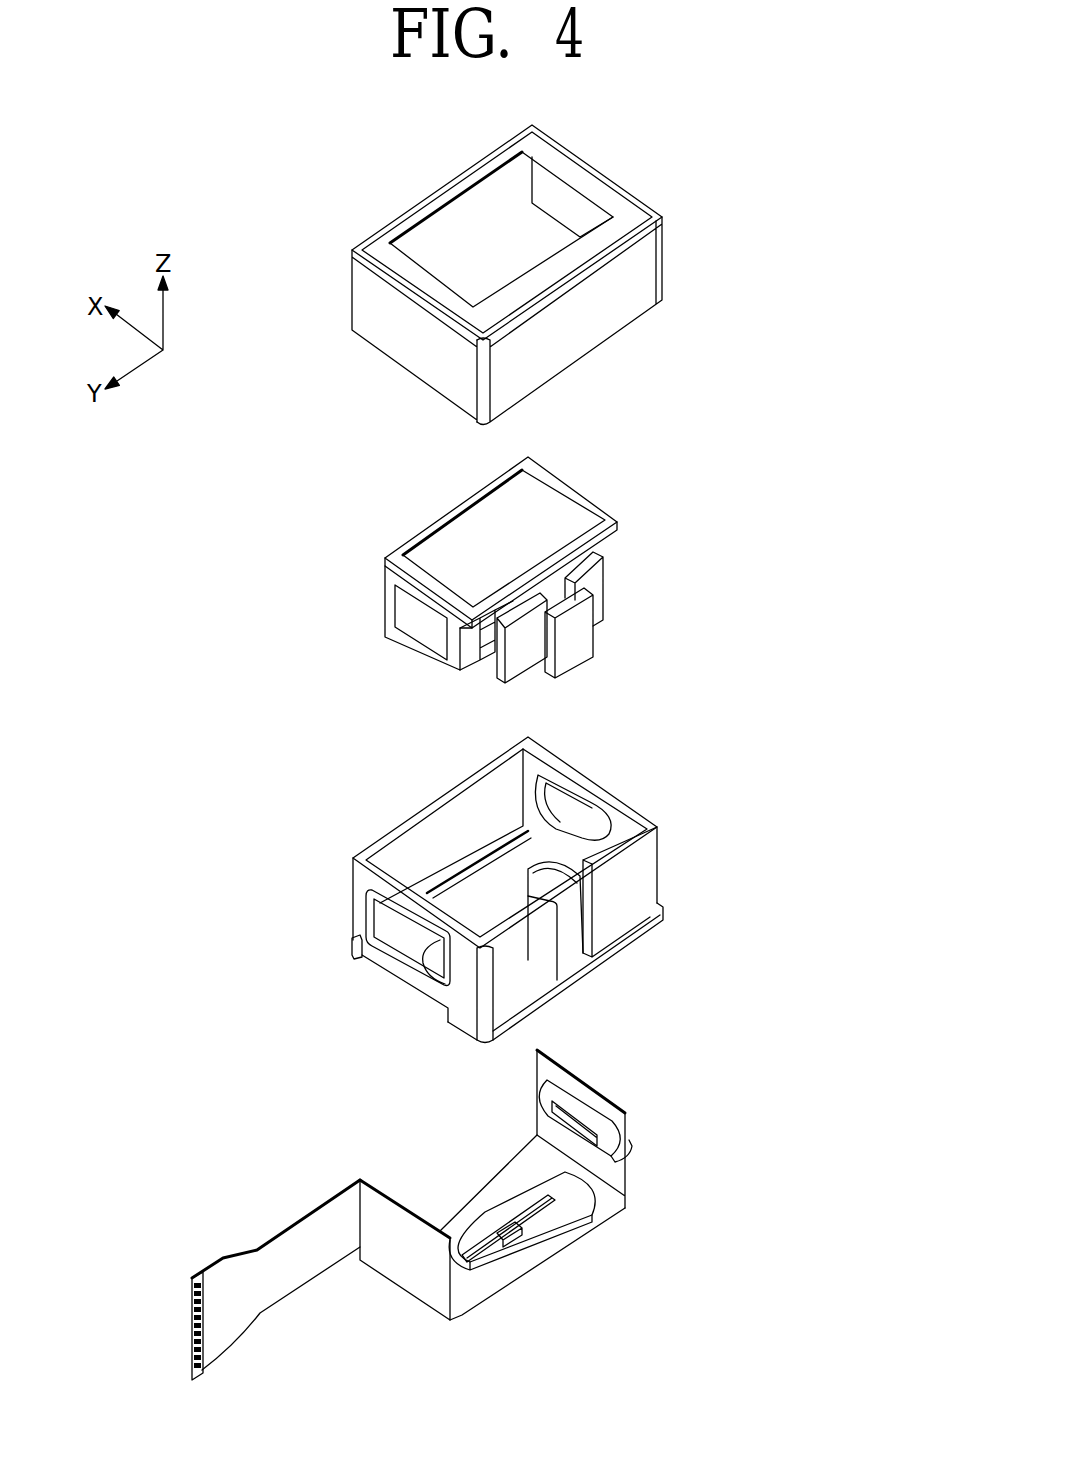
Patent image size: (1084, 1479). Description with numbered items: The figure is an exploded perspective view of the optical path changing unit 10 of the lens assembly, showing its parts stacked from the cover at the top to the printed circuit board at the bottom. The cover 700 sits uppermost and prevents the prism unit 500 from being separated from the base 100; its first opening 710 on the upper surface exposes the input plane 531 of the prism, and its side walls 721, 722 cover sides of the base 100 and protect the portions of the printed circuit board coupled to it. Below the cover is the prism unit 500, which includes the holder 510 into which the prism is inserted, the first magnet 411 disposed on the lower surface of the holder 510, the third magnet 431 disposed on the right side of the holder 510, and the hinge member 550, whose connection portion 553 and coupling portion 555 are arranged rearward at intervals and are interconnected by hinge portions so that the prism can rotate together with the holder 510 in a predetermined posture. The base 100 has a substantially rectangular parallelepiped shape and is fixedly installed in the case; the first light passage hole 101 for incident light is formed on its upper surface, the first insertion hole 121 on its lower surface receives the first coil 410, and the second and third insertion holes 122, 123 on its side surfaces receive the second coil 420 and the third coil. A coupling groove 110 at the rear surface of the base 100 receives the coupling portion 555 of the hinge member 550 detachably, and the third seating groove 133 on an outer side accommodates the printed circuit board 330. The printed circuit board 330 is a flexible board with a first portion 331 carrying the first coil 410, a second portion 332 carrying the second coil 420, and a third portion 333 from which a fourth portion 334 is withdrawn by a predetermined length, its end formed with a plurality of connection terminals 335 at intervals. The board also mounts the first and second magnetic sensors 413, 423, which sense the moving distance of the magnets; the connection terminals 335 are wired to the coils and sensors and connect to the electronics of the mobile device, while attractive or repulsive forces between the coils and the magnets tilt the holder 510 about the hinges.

The optical path changing unit 10 is at (439, 122).
The cover 700 is at (695, 258).
The first opening 710 is at (425, 255).
The side wall 721 is at (608, 320).
The side wall 722 is at (392, 340).
The prism unit 500 is at (362, 548).
The holder 510 is at (560, 485).
The input plane 531 is at (553, 520).
The third magnet 431 is at (432, 640).
The first magnet 411 is at (478, 672).
The hinge member 550 is at (603, 632).
The connection portion 553 is at (598, 582).
The coupling portion 555 is at (585, 655).
The base 100 is at (682, 822).
The first light passage hole 101 is at (447, 818).
The second insertion hole 122 is at (565, 802).
The first insertion hole 121 is at (567, 923).
The third insertion hole 123 is at (360, 952).
The third seating groove 133 is at (437, 993).
The coupling groove 110 is at (573, 950).
The printed circuit board 330 is at (633, 1200).
The first portion 331 is at (470, 1188).
The second portion 332 is at (622, 1101).
The third portion 333 is at (407, 1270).
The fourth portion 334 is at (277, 1297).
The connection terminals 335 is at (190, 1315).
The second coil 420 is at (618, 1140).
The second magnetic sensor 423 is at (575, 1117).
The first coil 410 is at (550, 1232).
The first magnetic sensor 413 is at (508, 1245).